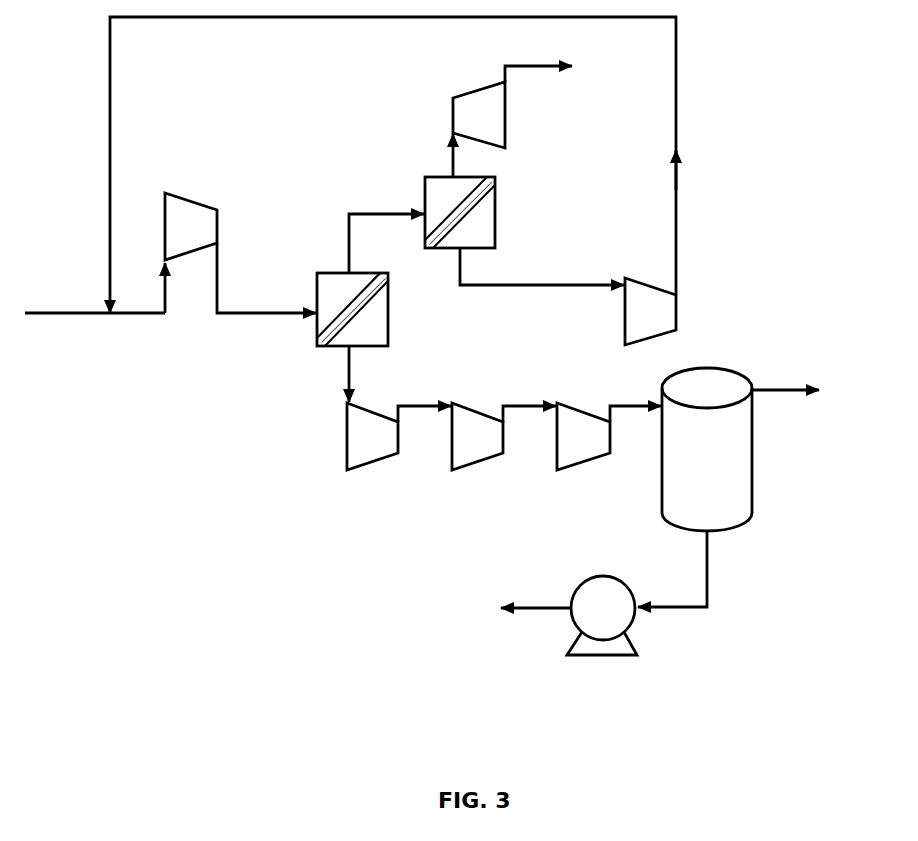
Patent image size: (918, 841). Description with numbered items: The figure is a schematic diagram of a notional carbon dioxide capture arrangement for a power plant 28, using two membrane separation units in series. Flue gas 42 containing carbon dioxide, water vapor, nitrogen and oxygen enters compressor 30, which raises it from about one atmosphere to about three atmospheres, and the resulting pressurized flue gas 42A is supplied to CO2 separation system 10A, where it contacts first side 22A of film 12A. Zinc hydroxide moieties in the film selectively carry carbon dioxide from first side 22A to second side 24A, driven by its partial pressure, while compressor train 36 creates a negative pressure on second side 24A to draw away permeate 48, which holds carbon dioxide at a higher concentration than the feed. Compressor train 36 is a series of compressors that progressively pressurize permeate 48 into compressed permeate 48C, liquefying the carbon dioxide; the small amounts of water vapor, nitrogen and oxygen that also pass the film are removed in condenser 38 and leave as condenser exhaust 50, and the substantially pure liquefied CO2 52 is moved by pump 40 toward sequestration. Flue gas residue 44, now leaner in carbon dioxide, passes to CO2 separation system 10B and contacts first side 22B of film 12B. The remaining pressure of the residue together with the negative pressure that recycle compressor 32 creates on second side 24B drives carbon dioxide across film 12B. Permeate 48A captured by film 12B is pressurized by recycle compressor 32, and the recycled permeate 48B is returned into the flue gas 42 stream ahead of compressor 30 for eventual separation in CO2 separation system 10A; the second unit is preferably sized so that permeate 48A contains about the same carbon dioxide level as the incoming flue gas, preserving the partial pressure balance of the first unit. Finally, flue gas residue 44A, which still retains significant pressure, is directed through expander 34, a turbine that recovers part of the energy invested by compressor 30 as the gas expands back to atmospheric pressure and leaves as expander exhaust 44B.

The power plant 28 is at (790, 98).
The compressor 30 is at (191, 253).
The recycle compressor 32 is at (650, 311).
The expander 34 is at (479, 115).
The compressor train 36 is at (610, 485).
The condenser 38 is at (707, 449).
The pump 40 is at (569, 615).
The flue gas 42 is at (62, 314).
The pressurized flue gas 42A is at (258, 314).
The flue gas residue 44 is at (358, 212).
The flue gas residue 44A is at (452, 160).
The expander exhaust 44B is at (542, 68).
The permeate 48 is at (345, 362).
The permeate 48A is at (545, 287).
The recycled permeate 48B is at (676, 185).
The compressed permeate 48C is at (626, 404).
The condenser exhaust 50 is at (787, 387).
The liquefied CO2 52 is at (707, 570).
The CO2 separation system 10A is at (388, 328).
The CO2 separation system 10B is at (495, 222).
The film 12A is at (352, 296).
The film 12B is at (451, 207).
The first side 22A is at (370, 285).
The first side 22B is at (463, 177).
The second side 24A is at (368, 296).
The second side 24B is at (478, 190).